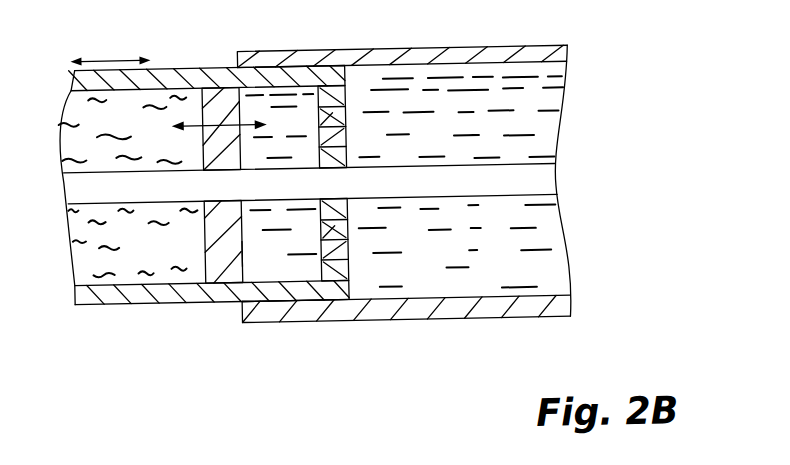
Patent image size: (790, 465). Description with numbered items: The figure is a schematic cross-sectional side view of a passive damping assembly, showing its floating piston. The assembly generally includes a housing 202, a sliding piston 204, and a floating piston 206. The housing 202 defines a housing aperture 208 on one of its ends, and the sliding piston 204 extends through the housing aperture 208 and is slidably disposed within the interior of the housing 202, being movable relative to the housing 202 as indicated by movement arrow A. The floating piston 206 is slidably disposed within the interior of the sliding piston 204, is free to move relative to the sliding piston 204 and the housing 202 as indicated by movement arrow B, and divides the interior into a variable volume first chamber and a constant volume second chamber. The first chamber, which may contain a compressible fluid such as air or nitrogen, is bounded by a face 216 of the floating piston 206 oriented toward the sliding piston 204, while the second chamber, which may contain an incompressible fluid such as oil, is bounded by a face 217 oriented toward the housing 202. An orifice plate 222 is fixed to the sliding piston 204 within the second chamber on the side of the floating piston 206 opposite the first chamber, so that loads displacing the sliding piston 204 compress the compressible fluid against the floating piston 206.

The housing 202 is at (425, 324).
The sliding piston 204 is at (83, 299).
The floating piston 206 is at (216, 261).
The housing aperture 208 is at (228, 304).
The face 216 is at (204, 248).
The face 217 is at (241, 254).
The orifice plate 222 is at (345, 114).